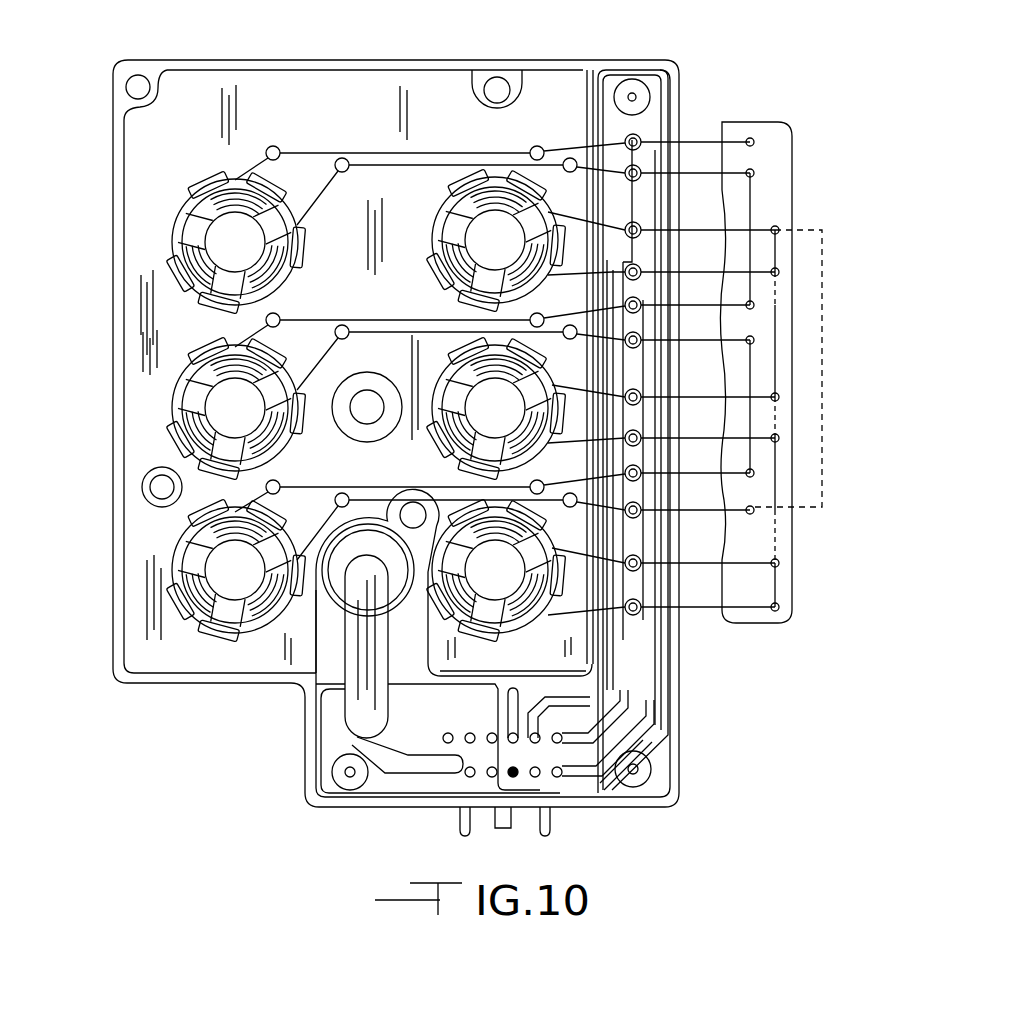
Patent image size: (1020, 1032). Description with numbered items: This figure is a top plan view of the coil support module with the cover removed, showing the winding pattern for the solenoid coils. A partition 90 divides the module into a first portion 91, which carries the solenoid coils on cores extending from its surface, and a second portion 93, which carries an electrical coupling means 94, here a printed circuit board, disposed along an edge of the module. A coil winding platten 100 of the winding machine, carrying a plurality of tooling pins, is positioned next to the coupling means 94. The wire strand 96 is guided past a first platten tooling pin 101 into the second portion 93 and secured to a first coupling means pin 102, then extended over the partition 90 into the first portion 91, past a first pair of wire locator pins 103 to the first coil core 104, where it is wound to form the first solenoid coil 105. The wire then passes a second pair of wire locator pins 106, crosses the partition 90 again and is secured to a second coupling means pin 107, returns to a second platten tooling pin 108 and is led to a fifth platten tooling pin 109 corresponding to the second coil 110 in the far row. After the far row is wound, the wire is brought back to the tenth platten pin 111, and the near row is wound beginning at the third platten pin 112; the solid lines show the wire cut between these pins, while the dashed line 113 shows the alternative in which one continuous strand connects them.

The partition 90 is at (396, 448).
The first portion 91 is at (424, 308).
The second portion 93 is at (652, 217).
The electrical coupling means 94 is at (640, 718).
The wire strand 96 is at (712, 607).
The coil winding platten 100 is at (783, 417).
The first platten tooling pin 101 is at (754, 138).
The first coupling means pin 102 is at (641, 137).
The first pair of wire locator pins 103 is at (273, 146).
The first coil core 104 is at (192, 243).
The first solenoid coil 105 is at (212, 207).
The second pair of wire locator pins 106 is at (343, 158).
The second coupling means pin 107 is at (700, 157).
The second platten tooling pin 108 is at (755, 174).
The fifth platten tooling pin 109 is at (754, 303).
The second coil 110 is at (200, 373).
The tenth platten pin 111 is at (755, 507).
The third platten pin 112 is at (779, 228).
The dashed line 113 is at (824, 352).